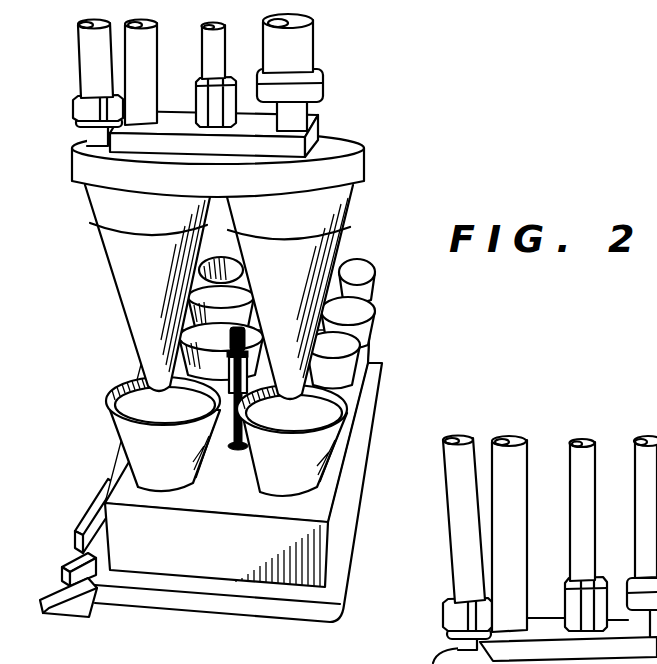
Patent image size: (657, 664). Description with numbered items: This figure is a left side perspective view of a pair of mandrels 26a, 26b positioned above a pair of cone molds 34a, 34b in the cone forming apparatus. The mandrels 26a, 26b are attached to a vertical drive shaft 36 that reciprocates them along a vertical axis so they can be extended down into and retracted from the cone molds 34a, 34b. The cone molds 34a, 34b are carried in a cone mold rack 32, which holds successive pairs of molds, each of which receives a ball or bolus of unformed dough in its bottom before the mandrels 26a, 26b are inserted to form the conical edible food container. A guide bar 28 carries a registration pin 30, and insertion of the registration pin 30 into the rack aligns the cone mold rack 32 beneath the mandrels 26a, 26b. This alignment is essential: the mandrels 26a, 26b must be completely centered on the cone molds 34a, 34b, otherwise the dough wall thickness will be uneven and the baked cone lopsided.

The mandrel 26a is at (147, 288).
The mandrel 26b is at (290, 292).
The cone mold 34a is at (163, 434).
The cone mold 34b is at (292, 440).
The guide bar 28 is at (92, 606).
The registration pin 30 is at (83, 518).
The cone mold rack 32 is at (212, 566).
The drive shaft 36 is at (573, 468).